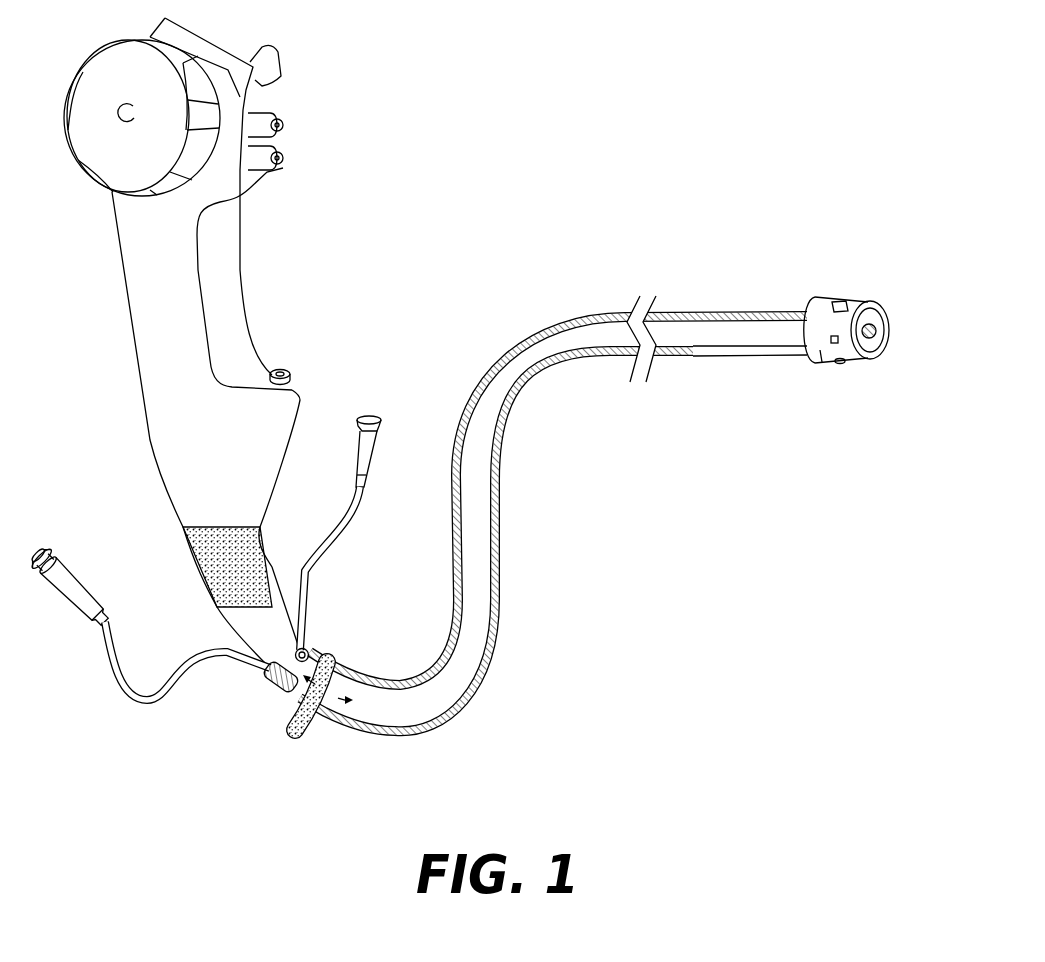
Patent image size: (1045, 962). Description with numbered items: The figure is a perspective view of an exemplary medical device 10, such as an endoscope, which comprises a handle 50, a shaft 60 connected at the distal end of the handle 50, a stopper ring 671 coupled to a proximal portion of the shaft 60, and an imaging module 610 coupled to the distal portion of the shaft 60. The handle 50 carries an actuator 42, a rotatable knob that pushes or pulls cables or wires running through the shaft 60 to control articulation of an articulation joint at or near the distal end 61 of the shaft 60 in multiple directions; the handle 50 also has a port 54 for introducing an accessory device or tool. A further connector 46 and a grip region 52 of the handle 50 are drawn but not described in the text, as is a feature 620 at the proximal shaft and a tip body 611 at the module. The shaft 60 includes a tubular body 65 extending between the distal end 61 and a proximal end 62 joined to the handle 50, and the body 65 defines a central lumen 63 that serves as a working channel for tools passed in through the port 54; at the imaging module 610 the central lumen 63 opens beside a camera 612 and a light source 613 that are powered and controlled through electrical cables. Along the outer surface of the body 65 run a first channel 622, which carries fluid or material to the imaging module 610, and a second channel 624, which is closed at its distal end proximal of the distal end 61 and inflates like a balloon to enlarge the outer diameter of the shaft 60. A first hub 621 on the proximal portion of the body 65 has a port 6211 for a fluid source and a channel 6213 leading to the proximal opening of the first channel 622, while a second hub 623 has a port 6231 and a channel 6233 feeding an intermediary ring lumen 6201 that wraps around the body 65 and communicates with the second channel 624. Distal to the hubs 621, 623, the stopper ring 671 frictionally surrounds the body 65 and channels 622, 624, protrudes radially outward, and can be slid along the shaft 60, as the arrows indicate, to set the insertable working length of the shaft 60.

The medical device 10 is at (358, 95).
The actuator 42 is at (98, 55).
The connector port 46 is at (262, 48).
The handle 50 is at (106, 301).
The grip portion 52 is at (198, 429).
The port 54 is at (291, 375).
The shaft 60 is at (317, 682).
The distal end 61 is at (906, 316).
The proximal end 62 is at (208, 602).
The central lumen 63 is at (878, 336).
The tubular body 65 is at (553, 542).
The imaging module 610 is at (864, 338).
The tip body 611 is at (822, 362).
The camera 612 is at (842, 303).
The light source 613 is at (845, 364).
The fluid port 620 is at (311, 637).
The first hub 621 is at (364, 512).
The first channel 622 is at (383, 676).
The second hub 623 is at (148, 619).
The second channel 624 is at (360, 740).
The stopper ring 671 is at (330, 660).
The ring lumen 6201 is at (272, 690).
The port 6211 is at (370, 418).
The channel 6213 is at (363, 520).
The port 6231 is at (44, 541).
The channel 6233 is at (110, 680).